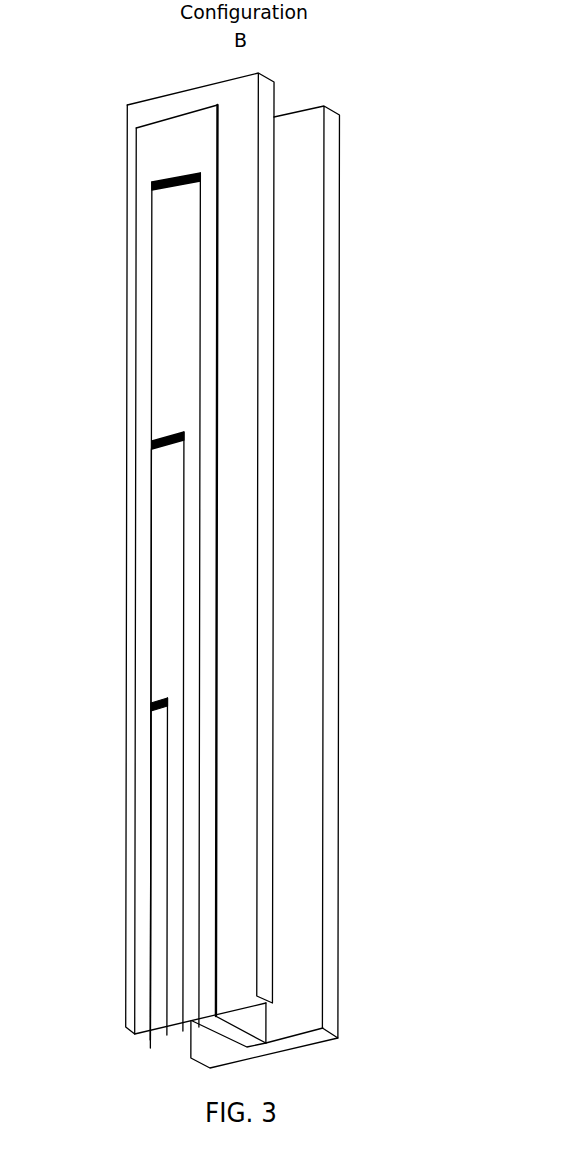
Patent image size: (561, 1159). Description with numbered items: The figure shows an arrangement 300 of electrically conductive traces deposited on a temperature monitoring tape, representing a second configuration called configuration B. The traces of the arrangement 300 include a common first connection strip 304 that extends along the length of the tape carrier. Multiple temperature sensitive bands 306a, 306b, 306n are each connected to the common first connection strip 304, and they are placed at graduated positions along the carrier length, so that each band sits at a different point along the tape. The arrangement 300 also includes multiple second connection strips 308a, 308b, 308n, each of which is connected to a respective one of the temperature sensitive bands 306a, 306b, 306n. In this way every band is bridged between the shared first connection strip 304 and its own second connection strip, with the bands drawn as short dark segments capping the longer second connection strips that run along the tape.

The arrangement 300 is at (179, 560).
The common first connection strip 304 is at (150, 939).
The temperature sensitive band 306a is at (164, 703).
The temperature sensitive band 306b is at (163, 433).
The temperature sensitive band 306n is at (165, 178).
The second connection strip 308a is at (167, 738).
The second connection strip 308b is at (182, 467).
The second connection strip 308n is at (200, 220).